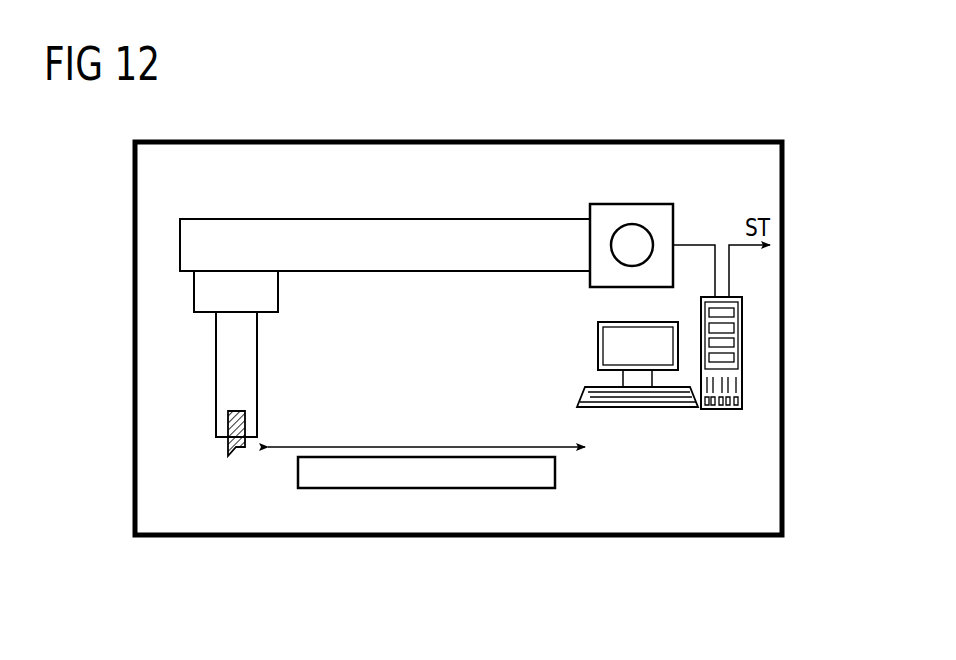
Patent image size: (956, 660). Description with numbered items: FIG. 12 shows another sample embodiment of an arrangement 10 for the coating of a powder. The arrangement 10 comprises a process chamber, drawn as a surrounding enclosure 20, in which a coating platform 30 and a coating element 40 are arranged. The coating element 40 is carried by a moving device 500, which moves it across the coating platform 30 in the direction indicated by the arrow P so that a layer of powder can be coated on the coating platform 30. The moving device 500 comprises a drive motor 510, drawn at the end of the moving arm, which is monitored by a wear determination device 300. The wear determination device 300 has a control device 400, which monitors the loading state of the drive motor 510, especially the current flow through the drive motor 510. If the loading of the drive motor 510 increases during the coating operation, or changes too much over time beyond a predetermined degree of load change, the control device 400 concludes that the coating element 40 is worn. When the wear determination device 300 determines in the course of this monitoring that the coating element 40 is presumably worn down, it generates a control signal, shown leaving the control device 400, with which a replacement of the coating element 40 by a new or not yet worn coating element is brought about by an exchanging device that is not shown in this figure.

The arrangement 10 is at (680, 127).
The housing 20 is at (433, 141).
The coating platform 30 is at (515, 480).
The coating element 40 is at (230, 425).
The wear determination device 300 is at (660, 432).
The control device 400 is at (740, 337).
The moving device 500 is at (270, 299).
The drive motor 510 is at (630, 206).
The direction of movement P is at (423, 445).